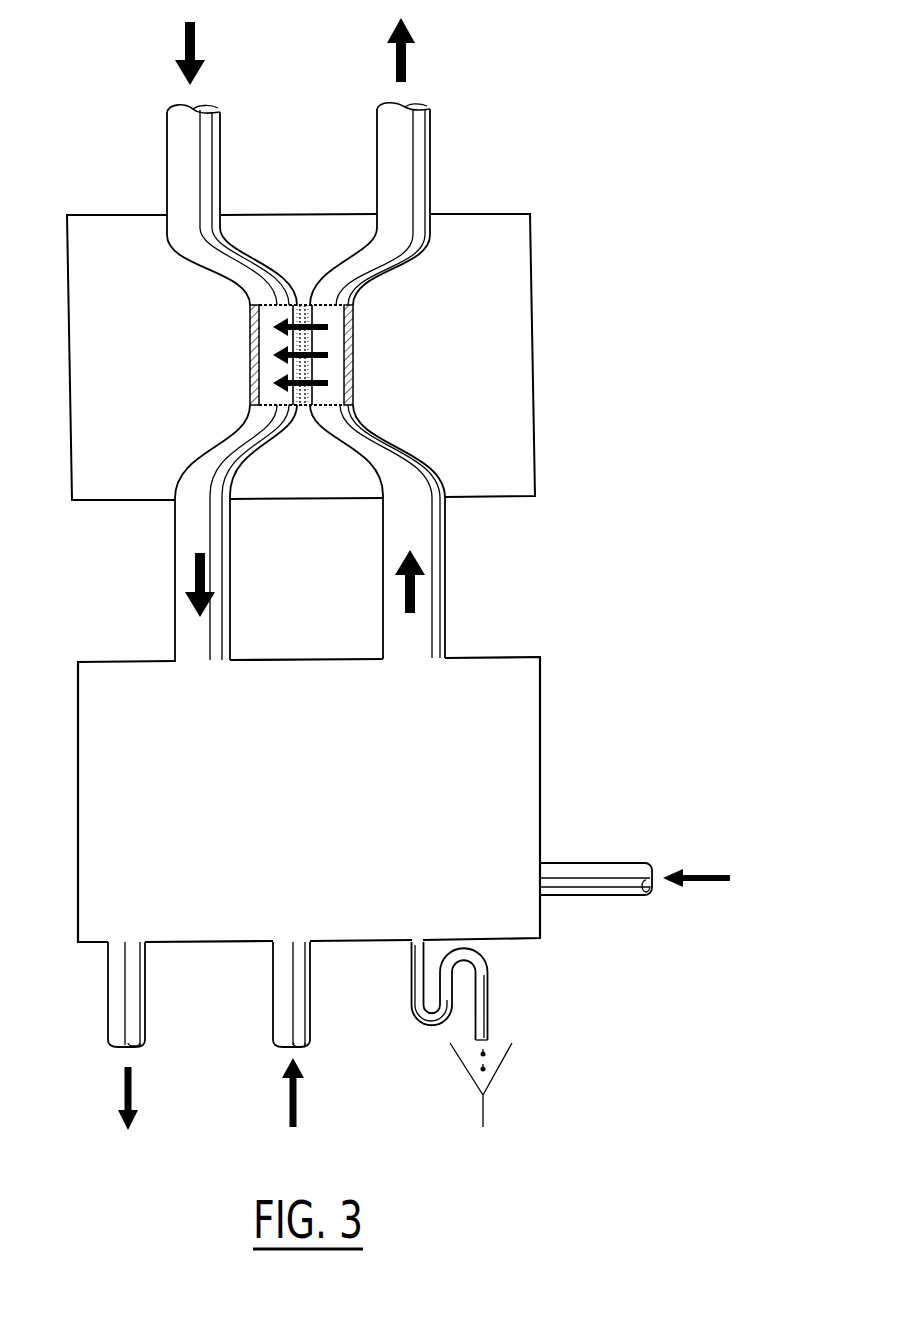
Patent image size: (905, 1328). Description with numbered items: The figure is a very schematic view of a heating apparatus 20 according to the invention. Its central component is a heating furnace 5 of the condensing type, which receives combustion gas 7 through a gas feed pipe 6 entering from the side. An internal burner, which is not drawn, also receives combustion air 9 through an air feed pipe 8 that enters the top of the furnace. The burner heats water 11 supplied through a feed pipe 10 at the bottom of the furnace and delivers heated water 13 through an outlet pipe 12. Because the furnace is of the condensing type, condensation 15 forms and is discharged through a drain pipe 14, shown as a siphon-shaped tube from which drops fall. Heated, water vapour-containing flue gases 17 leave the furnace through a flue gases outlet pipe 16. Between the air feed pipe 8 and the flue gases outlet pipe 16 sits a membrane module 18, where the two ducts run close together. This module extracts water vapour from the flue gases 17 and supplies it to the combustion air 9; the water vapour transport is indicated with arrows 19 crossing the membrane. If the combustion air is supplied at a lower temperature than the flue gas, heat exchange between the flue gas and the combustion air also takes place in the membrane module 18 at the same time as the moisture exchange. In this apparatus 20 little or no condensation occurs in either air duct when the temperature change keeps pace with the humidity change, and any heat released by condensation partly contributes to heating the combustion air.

The heating furnace 5 is at (332, 810).
The gas feed pipe 6 is at (598, 868).
The combustion gas 7 is at (705, 870).
The air feed pipe 8 is at (180, 527).
The combustion air 9 is at (195, 572).
The feed pipe 10 is at (295, 1003).
The water 11 is at (296, 1097).
The outlet pipe 12 is at (110, 992).
The heated water 13 is at (128, 1090).
The drain pipe 14 is at (485, 1003).
The condensation 15 is at (487, 1062).
The flue gases outlet pipe 16 is at (425, 524).
The flue gases 17 is at (415, 592).
The membrane module 18 is at (353, 342).
The arrows 19 is at (320, 330).
The apparatus 20 is at (522, 92).